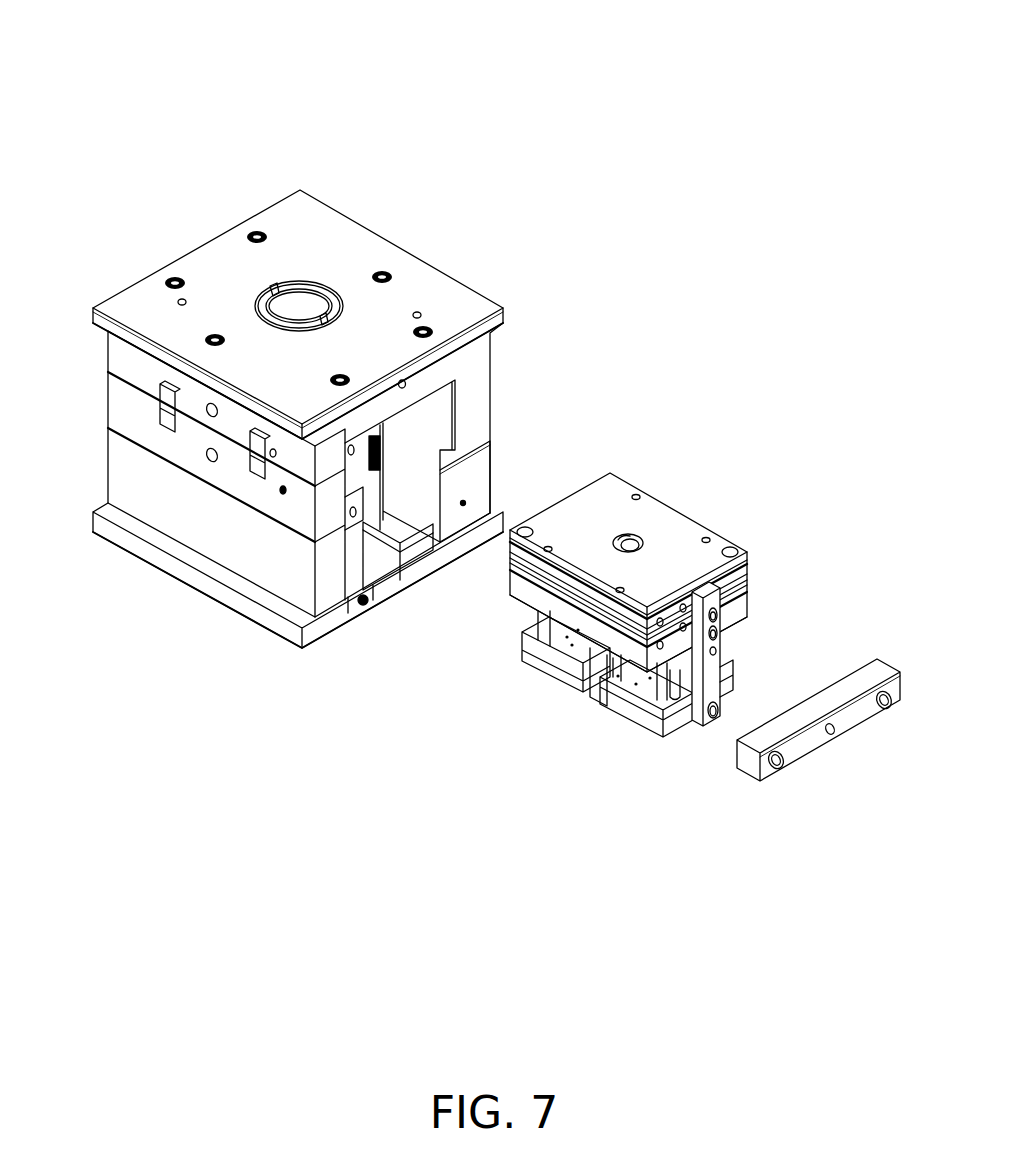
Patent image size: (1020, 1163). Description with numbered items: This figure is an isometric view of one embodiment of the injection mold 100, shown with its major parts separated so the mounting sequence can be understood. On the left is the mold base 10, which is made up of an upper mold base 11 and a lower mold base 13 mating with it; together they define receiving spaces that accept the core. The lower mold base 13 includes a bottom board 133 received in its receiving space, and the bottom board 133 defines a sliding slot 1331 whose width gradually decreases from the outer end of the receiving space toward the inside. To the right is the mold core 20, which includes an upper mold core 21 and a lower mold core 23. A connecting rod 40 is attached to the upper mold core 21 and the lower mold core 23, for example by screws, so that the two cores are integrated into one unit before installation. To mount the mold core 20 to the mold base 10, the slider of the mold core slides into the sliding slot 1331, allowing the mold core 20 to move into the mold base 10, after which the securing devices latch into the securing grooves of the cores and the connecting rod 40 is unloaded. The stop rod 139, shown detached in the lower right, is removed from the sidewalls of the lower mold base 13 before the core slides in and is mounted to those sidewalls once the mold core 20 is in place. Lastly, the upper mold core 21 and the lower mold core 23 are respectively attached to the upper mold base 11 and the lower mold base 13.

The injection mold 100 is at (438, 48).
The mold base 10 is at (603, 313).
The upper mold base 11 is at (472, 343).
The lower mold base 13 is at (472, 483).
The bottom board 133 is at (373, 557).
The sliding slot 1331 is at (418, 565).
The mold core 20 is at (840, 510).
The upper mold core 21 is at (737, 575).
The lower mold core 23 is at (737, 600).
The connecting rod 40 is at (720, 660).
The stop rod 139 is at (850, 720).